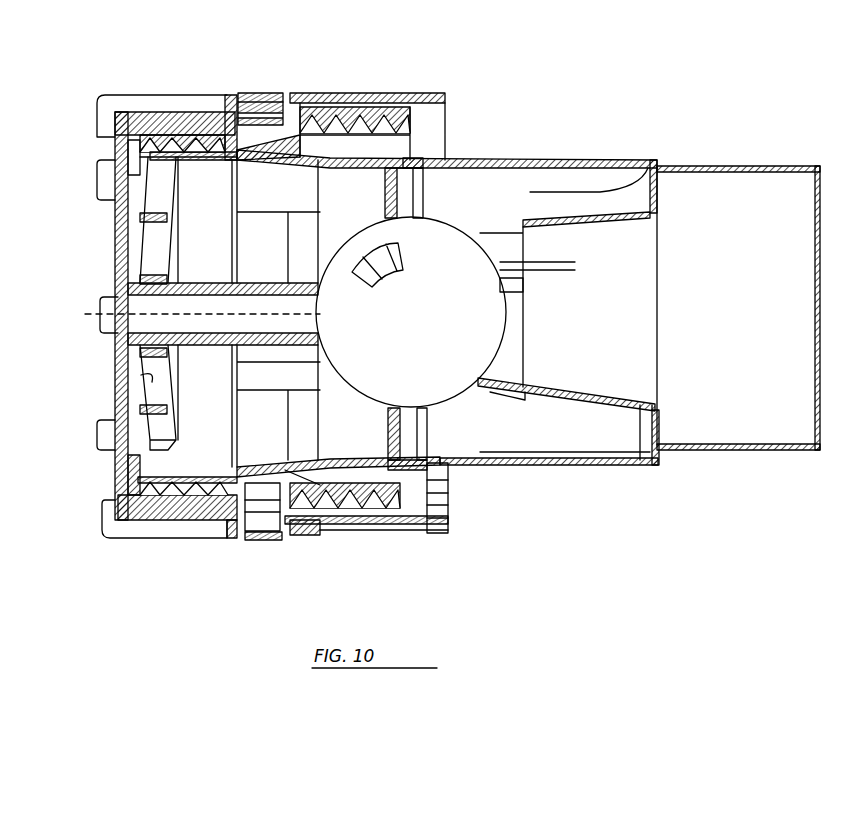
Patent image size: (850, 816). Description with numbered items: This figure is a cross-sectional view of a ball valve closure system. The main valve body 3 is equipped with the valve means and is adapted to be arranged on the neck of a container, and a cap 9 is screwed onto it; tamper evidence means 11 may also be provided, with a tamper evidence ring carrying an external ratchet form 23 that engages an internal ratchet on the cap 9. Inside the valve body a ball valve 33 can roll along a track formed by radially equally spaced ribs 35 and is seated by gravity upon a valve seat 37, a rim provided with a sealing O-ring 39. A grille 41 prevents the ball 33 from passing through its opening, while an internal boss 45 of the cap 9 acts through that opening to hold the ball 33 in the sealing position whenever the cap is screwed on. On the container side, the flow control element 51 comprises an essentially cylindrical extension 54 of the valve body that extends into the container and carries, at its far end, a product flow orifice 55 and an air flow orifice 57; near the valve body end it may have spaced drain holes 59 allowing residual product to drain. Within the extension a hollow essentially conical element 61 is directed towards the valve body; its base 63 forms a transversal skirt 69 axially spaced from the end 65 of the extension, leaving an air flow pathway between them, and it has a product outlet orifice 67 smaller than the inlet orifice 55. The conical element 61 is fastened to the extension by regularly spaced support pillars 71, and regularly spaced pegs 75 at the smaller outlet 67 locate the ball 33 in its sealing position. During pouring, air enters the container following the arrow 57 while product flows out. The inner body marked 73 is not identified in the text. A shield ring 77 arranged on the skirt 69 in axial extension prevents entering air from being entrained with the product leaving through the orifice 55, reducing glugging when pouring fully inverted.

The main valve body 3 is at (348, 520).
The cap 9 is at (115, 500).
The tamper evidence means 11 is at (302, 535).
The external ratchet form 23 is at (258, 540).
The ball valve 33 is at (441, 376).
The ribs 35 is at (258, 200).
The valve seat 37 is at (427, 433).
The sealing O-ring 39 is at (408, 198).
The grille 41 is at (145, 373).
The internal boss 45 is at (188, 285).
The flow control element 51 is at (595, 150).
The cylindrical extension 54 is at (540, 160).
The product flow orifice 55 is at (660, 290).
The air flow orifice 57 is at (648, 150).
The drain holes 59 is at (440, 475).
The conical element 61 is at (658, 232).
The base of conical element 63 is at (665, 384).
The end of cylindrical extension 65 is at (648, 166).
The product outlet orifice 67 is at (523, 262).
The transversal skirt 69 is at (660, 440).
The support pillars 71 is at (655, 470).
The lower inner body 73 is at (206, 402).
The pegs 75 is at (498, 392).
The shield ring 77 is at (783, 168).